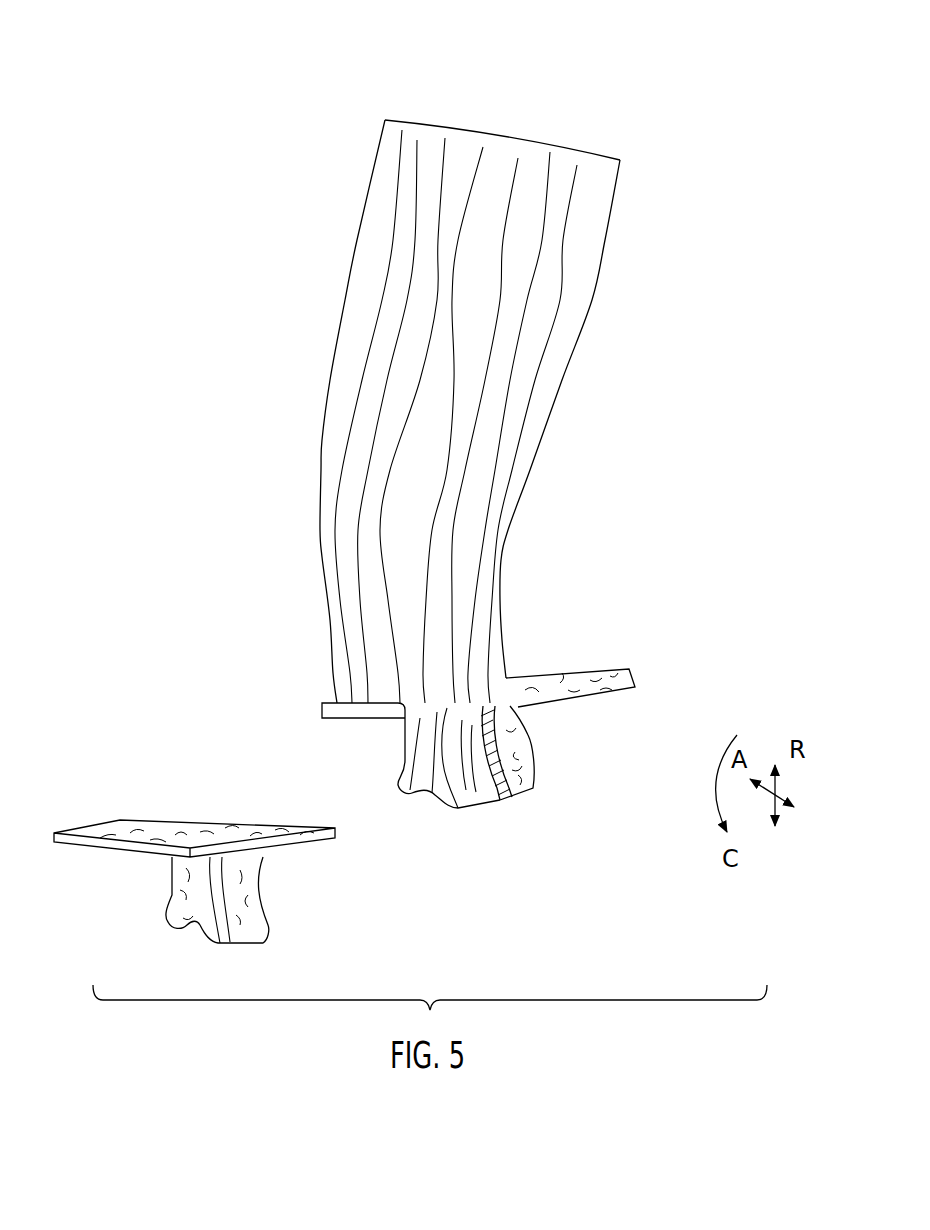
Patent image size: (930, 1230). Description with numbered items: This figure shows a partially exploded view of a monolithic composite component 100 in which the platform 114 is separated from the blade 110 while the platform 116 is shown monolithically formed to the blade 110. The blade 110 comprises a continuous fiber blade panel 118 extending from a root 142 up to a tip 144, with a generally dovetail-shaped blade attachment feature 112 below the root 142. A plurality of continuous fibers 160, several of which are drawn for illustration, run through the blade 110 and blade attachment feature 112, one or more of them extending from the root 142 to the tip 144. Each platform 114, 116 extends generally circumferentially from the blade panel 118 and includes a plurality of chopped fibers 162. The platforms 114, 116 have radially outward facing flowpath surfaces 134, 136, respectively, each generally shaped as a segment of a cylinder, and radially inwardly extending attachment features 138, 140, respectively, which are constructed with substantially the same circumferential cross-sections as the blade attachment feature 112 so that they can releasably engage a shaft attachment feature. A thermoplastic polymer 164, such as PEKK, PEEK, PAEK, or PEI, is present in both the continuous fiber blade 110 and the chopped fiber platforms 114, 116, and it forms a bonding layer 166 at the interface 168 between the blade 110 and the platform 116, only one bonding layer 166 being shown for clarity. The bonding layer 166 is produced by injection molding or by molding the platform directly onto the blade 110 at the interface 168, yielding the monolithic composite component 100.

The monolithic composite component 100 is at (112, 80).
The blade 110 is at (312, 187).
The blade attachment feature 112 is at (380, 750).
The platform 114 is at (52, 812).
The platform 116 is at (672, 633).
The blade panel 118 is at (338, 318).
The flowpath surface 134 is at (110, 852).
The flowpath surface 136 is at (558, 673).
The attachment feature 138 is at (263, 918).
The attachment feature 140 is at (533, 753).
The root 142 is at (292, 753).
The tip 144 is at (530, 138).
The continuous fibers 160 is at (572, 210).
The chopped fibers 162 is at (595, 683).
The thermoplastic polymer 164 is at (380, 643).
The bonding layer 166 is at (497, 797).
The interface 168 is at (422, 775).